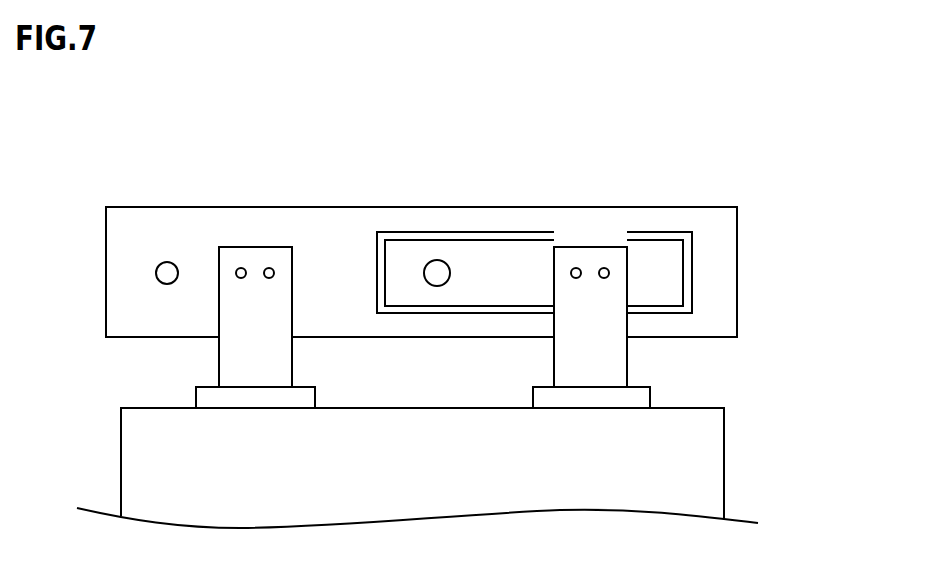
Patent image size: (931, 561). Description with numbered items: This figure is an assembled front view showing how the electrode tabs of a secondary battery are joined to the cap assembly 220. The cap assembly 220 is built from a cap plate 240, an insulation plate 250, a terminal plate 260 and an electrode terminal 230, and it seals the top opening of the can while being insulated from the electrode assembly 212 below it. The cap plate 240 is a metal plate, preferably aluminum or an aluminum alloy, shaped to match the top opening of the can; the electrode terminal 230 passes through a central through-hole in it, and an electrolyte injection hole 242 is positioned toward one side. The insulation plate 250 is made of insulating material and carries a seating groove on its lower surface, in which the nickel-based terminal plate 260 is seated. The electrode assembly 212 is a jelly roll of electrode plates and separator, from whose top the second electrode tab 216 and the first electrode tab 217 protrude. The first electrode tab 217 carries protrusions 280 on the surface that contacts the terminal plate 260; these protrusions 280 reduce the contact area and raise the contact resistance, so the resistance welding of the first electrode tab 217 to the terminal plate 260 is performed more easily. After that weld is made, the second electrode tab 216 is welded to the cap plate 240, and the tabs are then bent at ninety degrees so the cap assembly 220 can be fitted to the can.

The electrode assembly 212 is at (708, 468).
The second electrode tab 216 is at (233, 366).
The first electrode tab 217 is at (618, 367).
The cap assembly 220 is at (725, 193).
The electrode terminal 230 is at (437, 260).
The cap plate 240 is at (723, 318).
The electrolyte injection hole 242 is at (163, 262).
The insulation plate 250 is at (500, 237).
The terminal plate 260 is at (655, 247).
The protrusions 280 is at (593, 264).